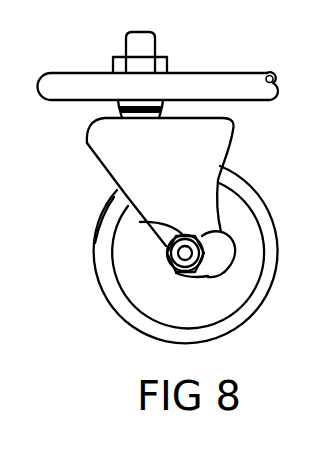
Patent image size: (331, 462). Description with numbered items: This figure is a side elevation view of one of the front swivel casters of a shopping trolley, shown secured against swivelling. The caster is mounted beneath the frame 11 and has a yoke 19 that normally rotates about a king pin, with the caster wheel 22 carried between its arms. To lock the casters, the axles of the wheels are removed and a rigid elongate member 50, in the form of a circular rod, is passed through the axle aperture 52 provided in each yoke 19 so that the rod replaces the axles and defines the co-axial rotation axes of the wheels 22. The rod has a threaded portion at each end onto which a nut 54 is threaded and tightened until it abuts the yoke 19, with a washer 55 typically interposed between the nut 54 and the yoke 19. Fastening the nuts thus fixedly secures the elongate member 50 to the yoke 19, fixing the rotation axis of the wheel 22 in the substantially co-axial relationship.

The frame 11 is at (218, 83).
The yoke 19 is at (118, 165).
The caster wheel 22 is at (143, 327).
The elongate member 50 is at (185, 253).
The axle aperture 52 is at (236, 228).
The nut 54 is at (150, 222).
The washer 55 is at (212, 278).